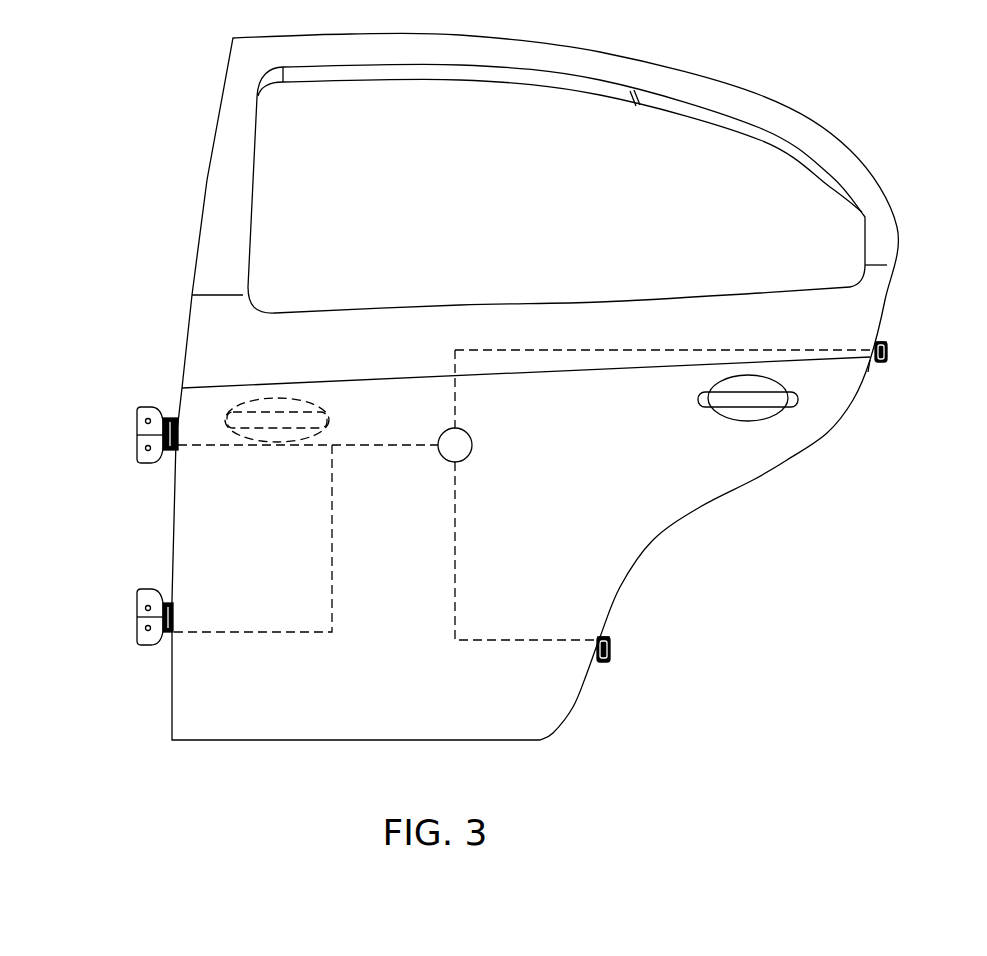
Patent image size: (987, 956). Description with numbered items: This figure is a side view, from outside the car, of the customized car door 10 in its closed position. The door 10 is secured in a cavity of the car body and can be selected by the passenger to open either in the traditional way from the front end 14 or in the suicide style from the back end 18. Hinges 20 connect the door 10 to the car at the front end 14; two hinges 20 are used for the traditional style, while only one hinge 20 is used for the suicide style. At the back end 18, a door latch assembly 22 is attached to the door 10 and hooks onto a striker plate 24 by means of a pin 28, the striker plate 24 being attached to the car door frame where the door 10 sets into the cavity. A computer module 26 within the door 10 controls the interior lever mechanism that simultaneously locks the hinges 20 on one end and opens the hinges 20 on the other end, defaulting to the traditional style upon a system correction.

The car door 10 is at (901, 98).
The front end 14 is at (203, 212).
The back end 18 is at (887, 242).
The hinge 20 is at (137, 425).
The door latch assembly 22 is at (888, 352).
The striker plate 24 is at (872, 367).
The computer module 26 is at (472, 445).
The pin 28 is at (887, 343).